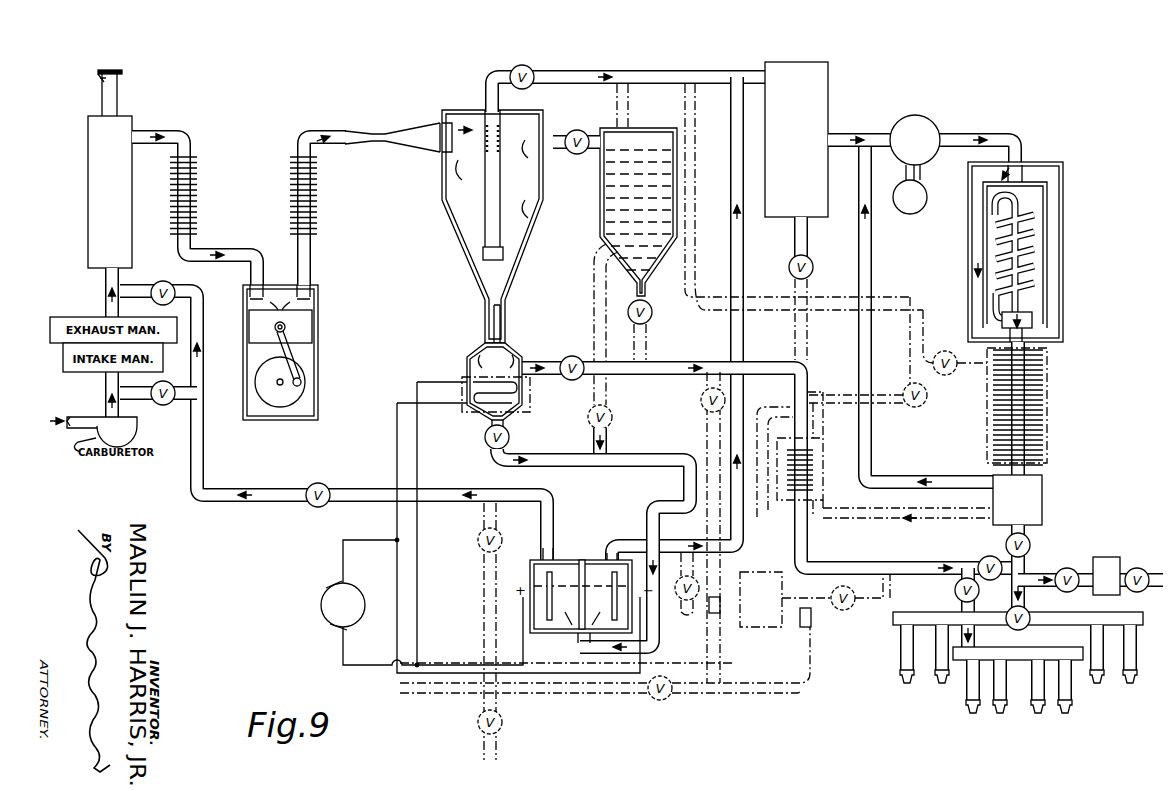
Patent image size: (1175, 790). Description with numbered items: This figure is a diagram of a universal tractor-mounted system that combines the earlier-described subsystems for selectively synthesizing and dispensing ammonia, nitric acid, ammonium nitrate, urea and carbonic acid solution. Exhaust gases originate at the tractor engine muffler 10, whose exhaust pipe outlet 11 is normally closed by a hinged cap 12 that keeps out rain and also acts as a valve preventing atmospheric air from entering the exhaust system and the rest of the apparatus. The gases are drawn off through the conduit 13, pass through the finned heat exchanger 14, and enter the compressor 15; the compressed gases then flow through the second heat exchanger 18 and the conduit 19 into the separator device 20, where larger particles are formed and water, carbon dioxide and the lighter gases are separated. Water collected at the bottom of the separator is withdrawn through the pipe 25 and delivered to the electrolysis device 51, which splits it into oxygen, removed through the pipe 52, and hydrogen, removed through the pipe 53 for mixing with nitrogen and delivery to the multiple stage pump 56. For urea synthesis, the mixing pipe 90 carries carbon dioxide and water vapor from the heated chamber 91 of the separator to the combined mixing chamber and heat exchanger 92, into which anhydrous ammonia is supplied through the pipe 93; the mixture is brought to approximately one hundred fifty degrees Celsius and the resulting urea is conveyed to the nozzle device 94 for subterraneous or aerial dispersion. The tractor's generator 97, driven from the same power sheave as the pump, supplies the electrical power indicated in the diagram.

The tractor engine muffler 10 is at (88, 190).
The exhaust pipe outlet 11 is at (117, 95).
The hinged cap 12 is at (114, 68).
The conduit 13 is at (186, 133).
The heat exchanger 14 is at (172, 203).
The compressor 15 is at (318, 368).
The second heat exchanger 18 is at (290, 199).
The conduit 19 is at (338, 130).
The separator device 20 is at (452, 245).
The pipe 25 is at (586, 470).
The electrolysis device 51 is at (545, 578).
The pipe 52 is at (747, 533).
The pipe 53 is at (442, 505).
The pump 56 is at (917, 118).
The mixing pipe 90 is at (661, 375).
The heated chamber 91 is at (522, 350).
The combined mixing chamber and heat exchanger 92 is at (815, 448).
The pipe 93 is at (768, 425).
The nozzle device 94 is at (927, 612).
The generator 97 is at (320, 597).